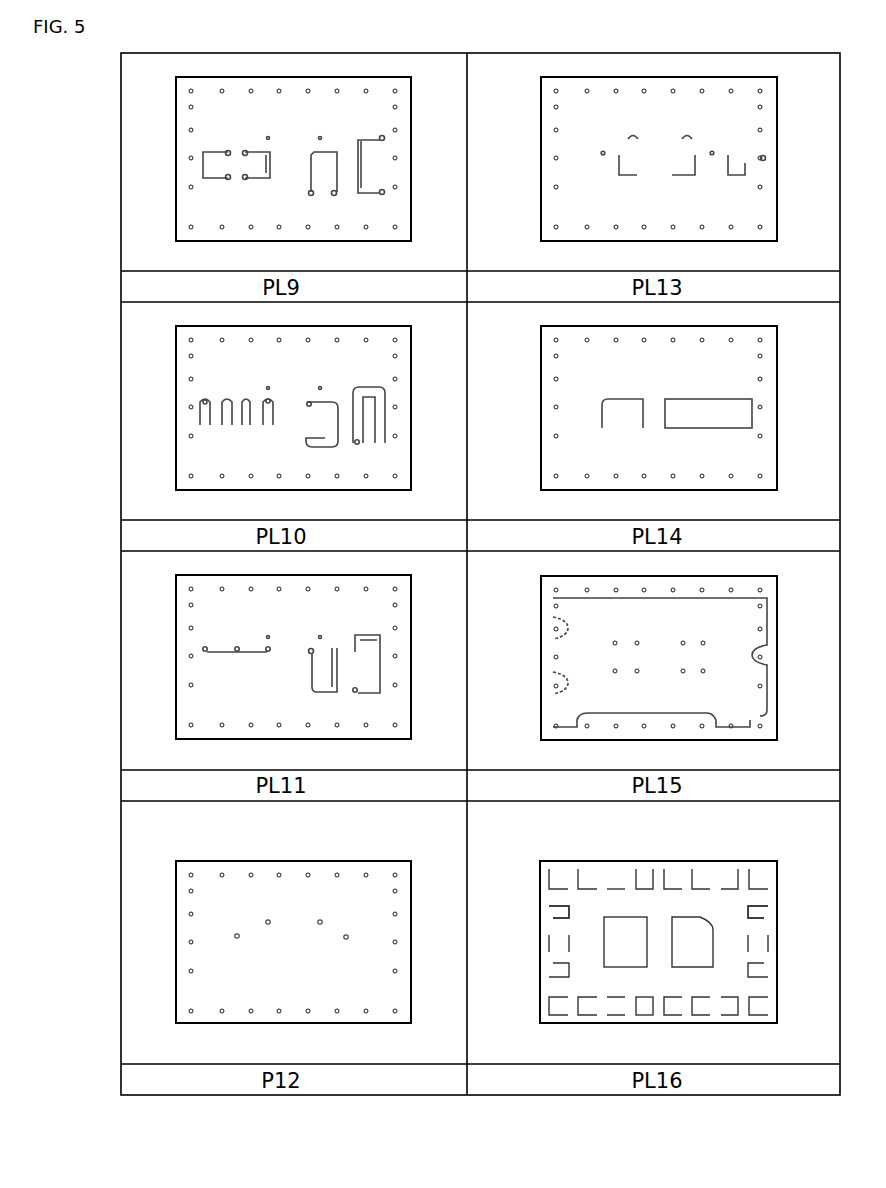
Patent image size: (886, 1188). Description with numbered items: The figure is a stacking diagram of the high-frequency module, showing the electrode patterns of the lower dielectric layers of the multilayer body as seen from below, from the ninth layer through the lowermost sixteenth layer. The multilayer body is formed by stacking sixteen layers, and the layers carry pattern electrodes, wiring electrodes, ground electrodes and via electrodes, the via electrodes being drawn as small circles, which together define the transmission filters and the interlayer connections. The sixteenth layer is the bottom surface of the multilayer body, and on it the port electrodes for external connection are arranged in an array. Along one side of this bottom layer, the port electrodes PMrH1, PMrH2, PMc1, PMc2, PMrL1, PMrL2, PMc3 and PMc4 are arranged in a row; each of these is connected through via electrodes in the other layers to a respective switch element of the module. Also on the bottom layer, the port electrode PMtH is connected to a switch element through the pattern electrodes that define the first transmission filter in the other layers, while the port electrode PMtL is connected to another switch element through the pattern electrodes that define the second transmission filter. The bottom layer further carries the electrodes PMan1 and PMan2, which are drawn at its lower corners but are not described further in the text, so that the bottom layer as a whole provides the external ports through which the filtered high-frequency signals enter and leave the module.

The port electrode PMrH1 is at (557, 869).
The port electrode PMrH2 is at (587, 868).
The port electrode PMrL1 is at (671, 868).
The port electrode PMrL2 is at (703, 868).
The port electrode PMc1 is at (614, 868).
The port electrode PMc2 is at (644, 868).
The port electrode PMc3 is at (731, 868).
The port electrode PMc4 is at (763, 868).
The port electrode PMtH is at (553, 915).
The port electrode PMtL is at (763, 917).
The antenna mounting pad 1 PMan1 is at (555, 970).
The antenna mounting pad 2 PMan2 is at (758, 1011).